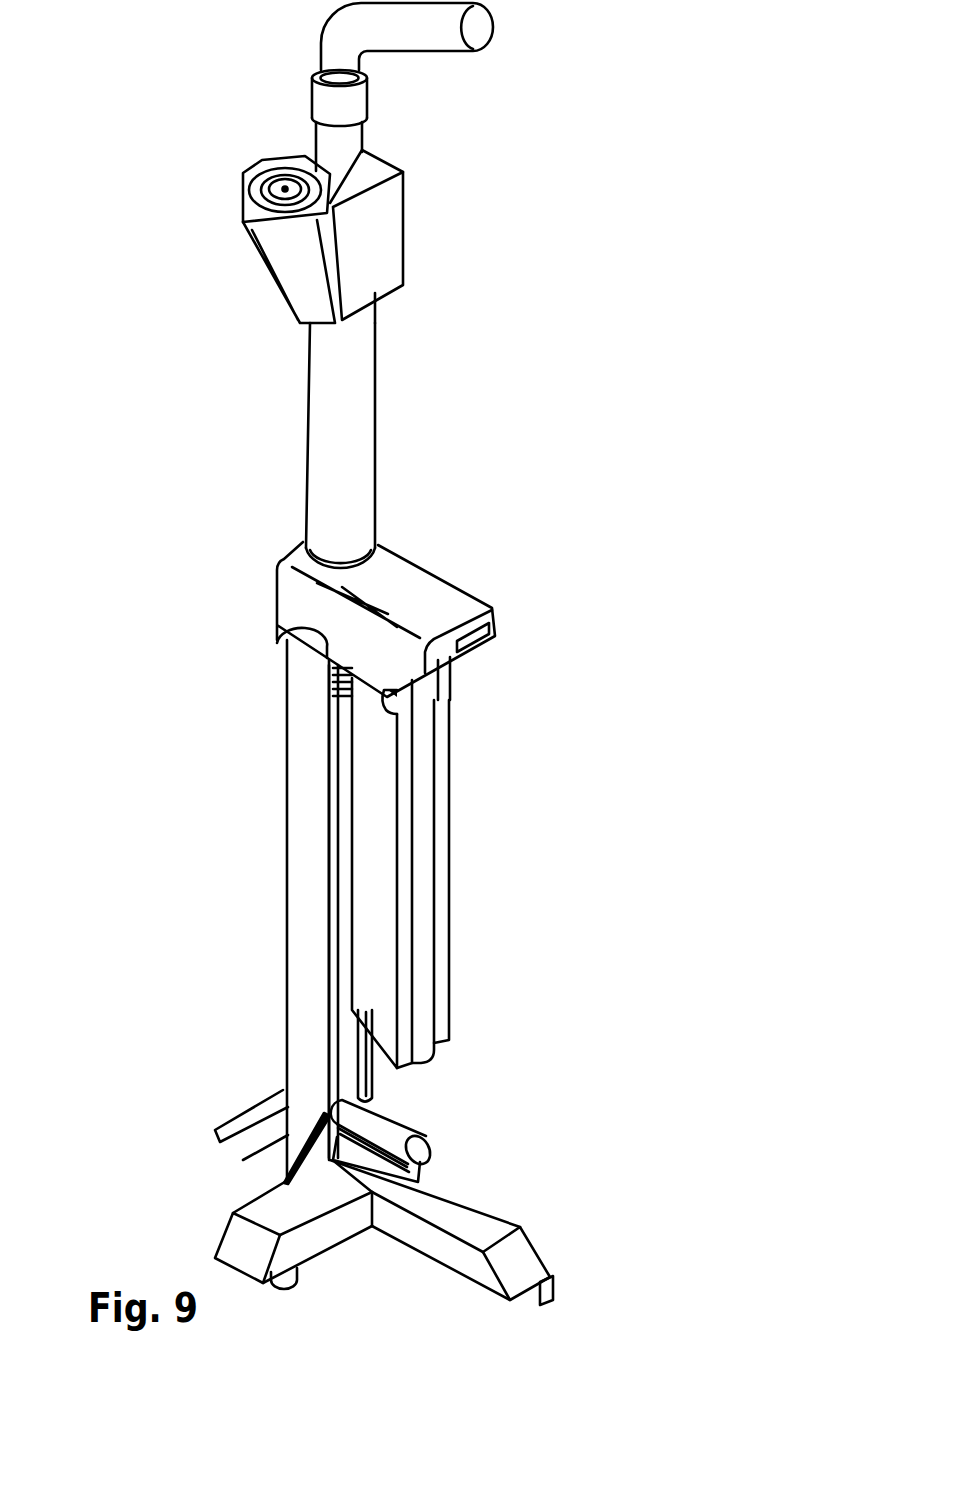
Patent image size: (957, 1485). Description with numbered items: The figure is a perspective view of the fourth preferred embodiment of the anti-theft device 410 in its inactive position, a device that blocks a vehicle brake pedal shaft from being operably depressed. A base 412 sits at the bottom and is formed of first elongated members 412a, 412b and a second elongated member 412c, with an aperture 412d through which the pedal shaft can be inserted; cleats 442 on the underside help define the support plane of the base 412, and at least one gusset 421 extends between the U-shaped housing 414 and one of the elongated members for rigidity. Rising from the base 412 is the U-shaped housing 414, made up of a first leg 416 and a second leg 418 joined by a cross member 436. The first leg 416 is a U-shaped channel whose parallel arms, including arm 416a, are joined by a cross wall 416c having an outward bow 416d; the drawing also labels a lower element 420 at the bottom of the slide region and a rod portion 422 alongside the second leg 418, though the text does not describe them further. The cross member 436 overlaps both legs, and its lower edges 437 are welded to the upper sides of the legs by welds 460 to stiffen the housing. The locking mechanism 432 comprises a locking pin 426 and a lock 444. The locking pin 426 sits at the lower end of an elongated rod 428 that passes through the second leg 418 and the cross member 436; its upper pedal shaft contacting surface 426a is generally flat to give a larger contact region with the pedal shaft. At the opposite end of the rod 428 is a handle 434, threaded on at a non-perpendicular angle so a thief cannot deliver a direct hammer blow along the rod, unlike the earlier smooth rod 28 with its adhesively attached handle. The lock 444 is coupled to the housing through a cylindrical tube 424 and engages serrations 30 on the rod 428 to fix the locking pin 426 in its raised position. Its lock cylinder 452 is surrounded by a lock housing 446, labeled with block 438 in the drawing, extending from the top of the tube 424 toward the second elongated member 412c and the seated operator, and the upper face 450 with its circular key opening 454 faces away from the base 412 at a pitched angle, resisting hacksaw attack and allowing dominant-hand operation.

The anti-theft device 410 is at (592, 446).
The locking mechanism 432 is at (466, 169).
The handle 434 is at (480, 28).
The rod 28 is at (350, 137).
The lock housing 446 is at (387, 232).
The lock cylinder 452 is at (287, 160).
The key opening 454 is at (243, 172).
The upper face 450 is at (240, 205).
The lock 444 is at (252, 257).
The cylindrical tube 424 is at (352, 387).
The clamp block 438 is at (423, 570).
The lower edges 437 is at (290, 628).
The cross member 436 is at (492, 608).
The welds 460 is at (282, 638).
The serrations 30 is at (343, 680).
The rod 422 is at (343, 943).
The rod 428 is at (318, 1083).
The U-shaped housing 414 is at (286, 782).
The second leg 418 is at (288, 830).
The first leg 416 is at (442, 1000).
The arm 416a is at (387, 860).
The cross wall 416c is at (440, 1033).
The outward bow 416d is at (427, 813).
The rod 420 is at (413, 1090).
The locking pin 426 is at (430, 1143).
The pedal shaft contacting surface 426a is at (415, 1122).
The base 412 is at (490, 1195).
The first elongated member 412a is at (442, 1243).
The first elongated member 412b is at (220, 1133).
The second elongated member 412c is at (258, 1212).
The aperture 412d is at (386, 1175).
The gusset 421 is at (272, 1166).
The cleats 442 is at (557, 1288).